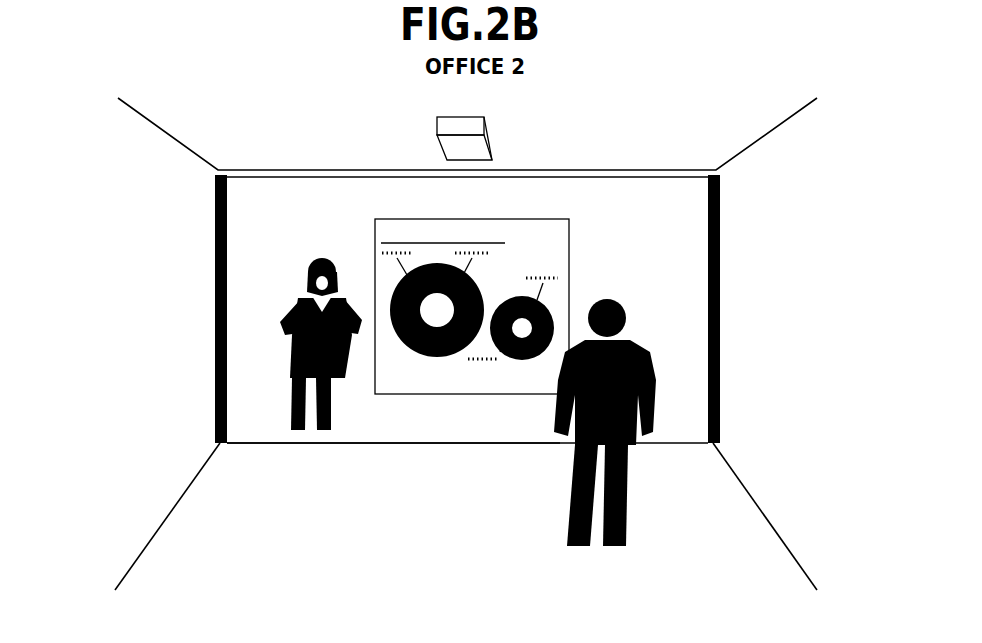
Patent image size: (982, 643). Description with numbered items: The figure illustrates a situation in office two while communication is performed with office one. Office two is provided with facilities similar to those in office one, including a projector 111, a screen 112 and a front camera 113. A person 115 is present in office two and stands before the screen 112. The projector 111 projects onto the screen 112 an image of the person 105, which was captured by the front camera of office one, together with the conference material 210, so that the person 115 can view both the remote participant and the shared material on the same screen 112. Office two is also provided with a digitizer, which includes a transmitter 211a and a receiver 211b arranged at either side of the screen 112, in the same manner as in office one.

The person 105 is at (325, 432).
The projector 111 is at (494, 150).
The screen 112 is at (253, 438).
The front camera 113 is at (470, 304).
The person 115 is at (567, 503).
The conference material 210 is at (563, 243).
The transmitter 211a is at (215, 268).
The receiver 211b is at (720, 292).